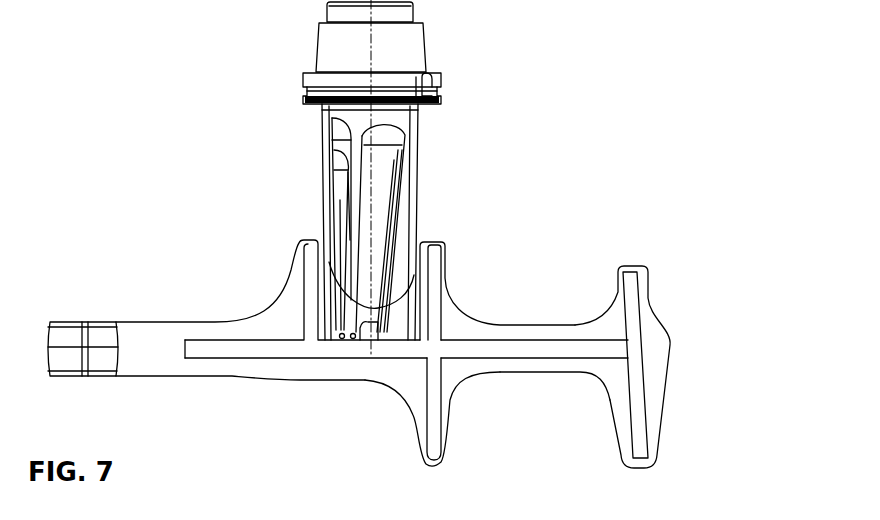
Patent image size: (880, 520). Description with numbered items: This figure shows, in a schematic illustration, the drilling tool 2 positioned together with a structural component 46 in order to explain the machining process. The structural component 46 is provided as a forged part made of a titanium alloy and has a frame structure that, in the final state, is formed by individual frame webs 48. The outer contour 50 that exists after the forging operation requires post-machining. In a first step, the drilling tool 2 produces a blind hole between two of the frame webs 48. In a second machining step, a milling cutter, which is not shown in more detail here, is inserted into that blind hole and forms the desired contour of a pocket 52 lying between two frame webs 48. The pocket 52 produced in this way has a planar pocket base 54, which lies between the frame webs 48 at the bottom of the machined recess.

The pin 2 is at (410, 128).
The structural component 46 is at (677, 236).
The frame webs 48 is at (432, 407).
The outer contour 50 is at (665, 382).
The pocket 52 is at (542, 408).
The pocket base 54 is at (414, 338).